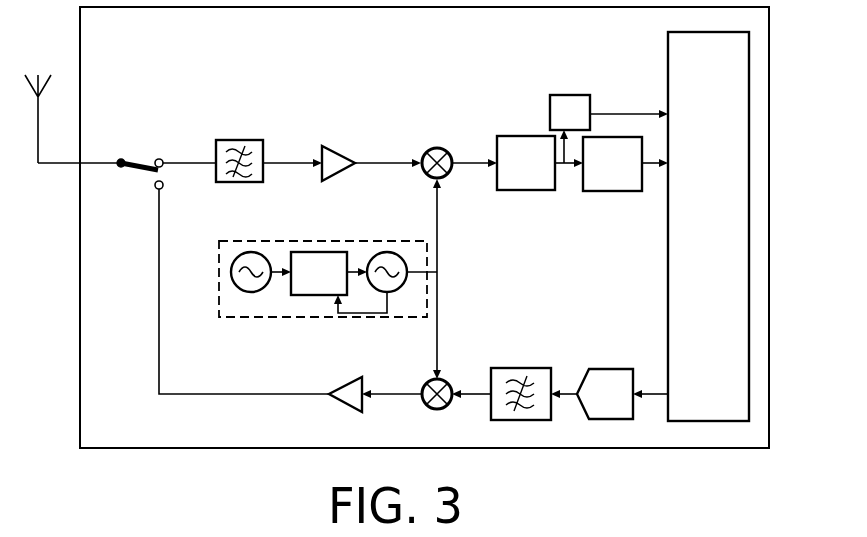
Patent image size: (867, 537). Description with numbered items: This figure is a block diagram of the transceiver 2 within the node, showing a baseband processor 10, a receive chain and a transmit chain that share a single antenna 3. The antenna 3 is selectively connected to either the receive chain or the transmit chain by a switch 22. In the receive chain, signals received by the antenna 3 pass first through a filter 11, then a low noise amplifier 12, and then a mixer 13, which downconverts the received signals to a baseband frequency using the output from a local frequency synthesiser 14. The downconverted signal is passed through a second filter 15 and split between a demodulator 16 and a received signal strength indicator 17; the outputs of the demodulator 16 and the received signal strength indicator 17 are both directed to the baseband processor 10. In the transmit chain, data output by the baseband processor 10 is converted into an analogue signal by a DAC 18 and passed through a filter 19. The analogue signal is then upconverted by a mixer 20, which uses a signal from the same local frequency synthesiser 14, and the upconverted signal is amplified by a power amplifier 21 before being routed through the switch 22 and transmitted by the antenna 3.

The transceiver 2 is at (80, 353).
The antenna 3 is at (38, 145).
The baseband processor 10 is at (668, 284).
The filter 11 is at (240, 140).
The low noise amplifier 12 is at (340, 148).
The mixer 13 is at (437, 147).
The local frequency synthesiser 14 is at (258, 318).
The second filter 15 is at (526, 135).
The demodulator 16 is at (612, 192).
The received signal strength indicator 17 is at (569, 95).
The DAC 18 is at (612, 368).
The filter 19 is at (520, 368).
The mixer 20 is at (447, 406).
The power amplifier 21 is at (345, 380).
The switch 22 is at (137, 160).